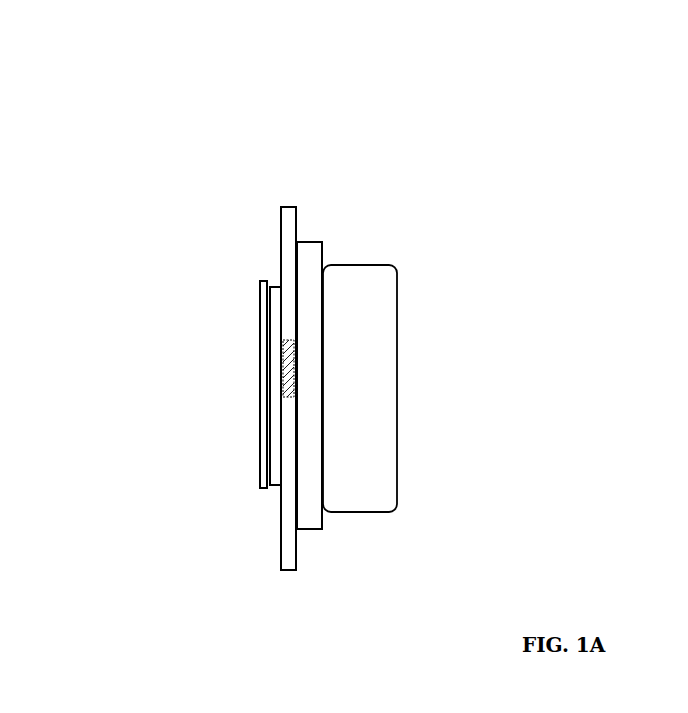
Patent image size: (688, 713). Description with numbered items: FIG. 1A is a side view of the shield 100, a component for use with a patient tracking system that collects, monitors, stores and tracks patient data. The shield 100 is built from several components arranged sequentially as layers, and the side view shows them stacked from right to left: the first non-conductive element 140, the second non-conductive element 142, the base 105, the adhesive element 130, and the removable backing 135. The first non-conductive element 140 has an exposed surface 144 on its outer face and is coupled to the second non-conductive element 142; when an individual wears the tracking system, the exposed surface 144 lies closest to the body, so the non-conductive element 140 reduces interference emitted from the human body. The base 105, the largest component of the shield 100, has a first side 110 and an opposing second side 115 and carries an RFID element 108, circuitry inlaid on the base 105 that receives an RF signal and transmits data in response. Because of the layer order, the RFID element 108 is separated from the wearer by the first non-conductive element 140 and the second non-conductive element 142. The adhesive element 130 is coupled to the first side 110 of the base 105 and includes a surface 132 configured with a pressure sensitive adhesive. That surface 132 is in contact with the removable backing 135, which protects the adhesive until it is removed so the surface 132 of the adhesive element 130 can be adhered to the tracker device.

The shield 100 is at (73, 69).
The base 105 is at (287, 572).
The RFID element 108 is at (284, 383).
The first side 110 is at (280, 218).
The second side 115 is at (296, 557).
The adhesive element 130 is at (279, 286).
The surface 132 is at (268, 343).
The removable backing 135 is at (264, 490).
The first non-conductive element 140 is at (337, 265).
The second non-conductive element 142 is at (312, 531).
The exposed surface 144 is at (397, 333).